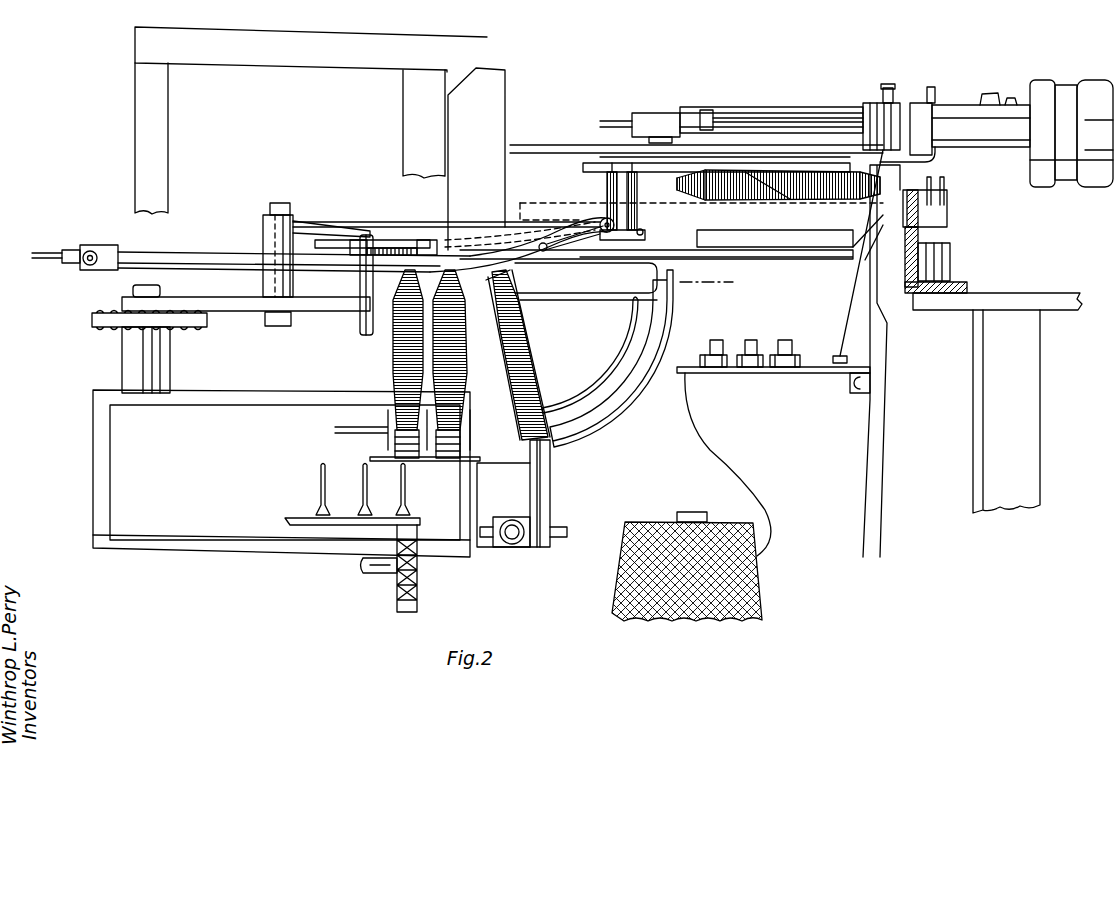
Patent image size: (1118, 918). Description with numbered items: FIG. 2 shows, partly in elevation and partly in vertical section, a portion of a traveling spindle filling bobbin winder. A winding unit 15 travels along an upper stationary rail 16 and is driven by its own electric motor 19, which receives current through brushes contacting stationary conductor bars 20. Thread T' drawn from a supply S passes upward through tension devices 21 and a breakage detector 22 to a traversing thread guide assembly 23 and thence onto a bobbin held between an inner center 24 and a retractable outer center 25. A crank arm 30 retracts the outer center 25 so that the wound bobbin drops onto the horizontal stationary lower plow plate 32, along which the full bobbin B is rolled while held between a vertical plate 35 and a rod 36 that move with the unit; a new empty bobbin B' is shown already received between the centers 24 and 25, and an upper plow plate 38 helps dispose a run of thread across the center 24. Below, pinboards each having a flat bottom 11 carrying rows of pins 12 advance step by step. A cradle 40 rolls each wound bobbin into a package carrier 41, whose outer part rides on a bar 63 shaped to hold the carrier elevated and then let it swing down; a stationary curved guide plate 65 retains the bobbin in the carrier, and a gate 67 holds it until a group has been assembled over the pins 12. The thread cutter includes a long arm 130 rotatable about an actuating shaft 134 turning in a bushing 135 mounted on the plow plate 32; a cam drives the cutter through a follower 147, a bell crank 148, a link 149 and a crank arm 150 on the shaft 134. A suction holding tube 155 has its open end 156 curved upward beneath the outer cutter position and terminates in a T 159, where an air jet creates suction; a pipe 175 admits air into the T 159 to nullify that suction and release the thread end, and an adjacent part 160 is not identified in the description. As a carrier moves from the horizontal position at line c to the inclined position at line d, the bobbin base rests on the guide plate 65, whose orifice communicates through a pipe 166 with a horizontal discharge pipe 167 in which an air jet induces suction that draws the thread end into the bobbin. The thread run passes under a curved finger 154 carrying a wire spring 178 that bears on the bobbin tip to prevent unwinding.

The flat bottom 11 is at (347, 522).
The pins 12 is at (318, 483).
The winding unit 15 is at (958, 90).
The upper stationary rail 16 is at (917, 268).
The electric motor 19 is at (1063, 92).
The stationary conductor bars 20 is at (943, 242).
The tension devices 21 is at (793, 335).
The breakage detector 22 is at (835, 358).
The traversing thread guide assembly 23 is at (882, 68).
The inner center 24 is at (893, 150).
The outer center 25 is at (703, 118).
The crank arm 30 is at (606, 124).
The lower plow plate 32 is at (625, 180).
The vertical plate 35 is at (710, 170).
The rod 36 is at (745, 173).
The upper plow plate 38 is at (817, 150).
The cradle 40 is at (777, 241).
The package carrier 41 is at (530, 340).
The bar 63 is at (607, 357).
The curved guide plate 65 is at (622, 413).
The gate 67 is at (417, 460).
The cutter arm 130 is at (936, 163).
The actuating shaft 134 is at (645, 231).
The bushing 135 is at (607, 187).
The follower 147 is at (370, 233).
The bell crank 148 is at (313, 226).
The link 149 is at (378, 222).
The crank arm 150 is at (605, 230).
The curved finger 154 is at (610, 222).
The suction holding tube 155 is at (397, 262).
The open end 156 is at (498, 248).
The T 159 is at (90, 245).
The rod 160 is at (87, 265).
The pipe 166 is at (537, 470).
The horizontal discharge pipe 167 is at (507, 547).
The pipe 175 is at (37, 253).
The wire spring 178 is at (547, 307).
The full bobbin B is at (554, 315).
The new empty bobbin B' is at (788, 99).
The supply S is at (740, 595).
The thread T' is at (728, 464).
The line c is at (712, 282).
The line d is at (550, 500).